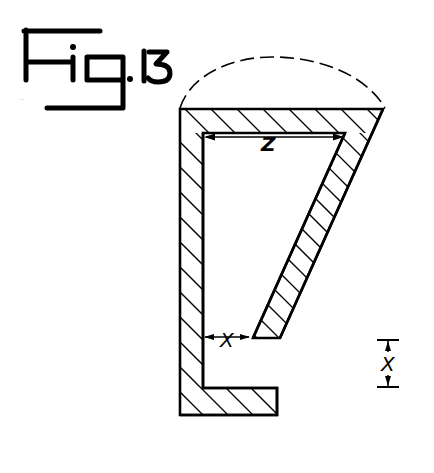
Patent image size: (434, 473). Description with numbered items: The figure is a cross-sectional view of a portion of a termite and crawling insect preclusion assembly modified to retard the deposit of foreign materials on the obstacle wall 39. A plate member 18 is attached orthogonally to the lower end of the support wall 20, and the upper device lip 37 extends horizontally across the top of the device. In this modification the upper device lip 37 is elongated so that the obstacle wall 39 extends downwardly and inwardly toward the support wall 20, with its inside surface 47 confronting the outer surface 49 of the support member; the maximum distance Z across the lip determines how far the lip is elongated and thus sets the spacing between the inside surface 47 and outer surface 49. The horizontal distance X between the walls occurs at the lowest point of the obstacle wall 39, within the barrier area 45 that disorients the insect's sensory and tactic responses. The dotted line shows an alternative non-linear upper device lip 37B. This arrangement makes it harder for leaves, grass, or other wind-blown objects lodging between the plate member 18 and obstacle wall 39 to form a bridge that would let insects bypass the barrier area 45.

The plate member 18 is at (227, 405).
The support wall 20 is at (187, 253).
The upper device lip 37 is at (295, 115).
The upper device lip 37B is at (259, 57).
The obstacle wall 39 is at (325, 226).
The barrier area 45 is at (236, 363).
The inside surface 47 is at (311, 211).
The outer surface 49 is at (204, 247).